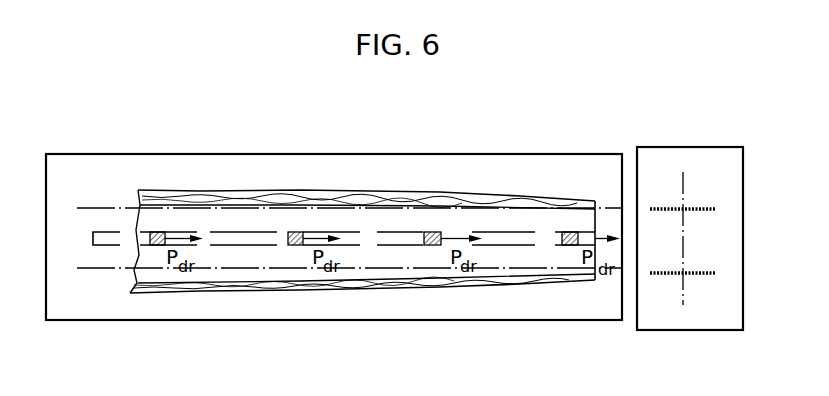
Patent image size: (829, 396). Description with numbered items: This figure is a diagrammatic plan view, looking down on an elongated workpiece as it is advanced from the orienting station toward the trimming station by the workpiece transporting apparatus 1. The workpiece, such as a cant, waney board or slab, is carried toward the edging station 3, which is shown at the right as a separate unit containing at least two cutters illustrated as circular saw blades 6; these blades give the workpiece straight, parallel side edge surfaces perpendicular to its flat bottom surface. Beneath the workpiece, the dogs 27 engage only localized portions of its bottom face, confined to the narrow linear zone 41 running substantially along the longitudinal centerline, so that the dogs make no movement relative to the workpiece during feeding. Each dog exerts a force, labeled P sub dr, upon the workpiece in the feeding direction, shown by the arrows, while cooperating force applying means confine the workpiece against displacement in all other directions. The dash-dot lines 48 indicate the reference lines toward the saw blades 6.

The workpiece transporting apparatus 1 is at (507, 147).
The edging station 3 is at (699, 143).
The circular saw blades 6 is at (697, 207).
The dogs 27 is at (302, 233).
The narrow linear zone 41 is at (237, 235).
The axis lines 48 is at (92, 207).